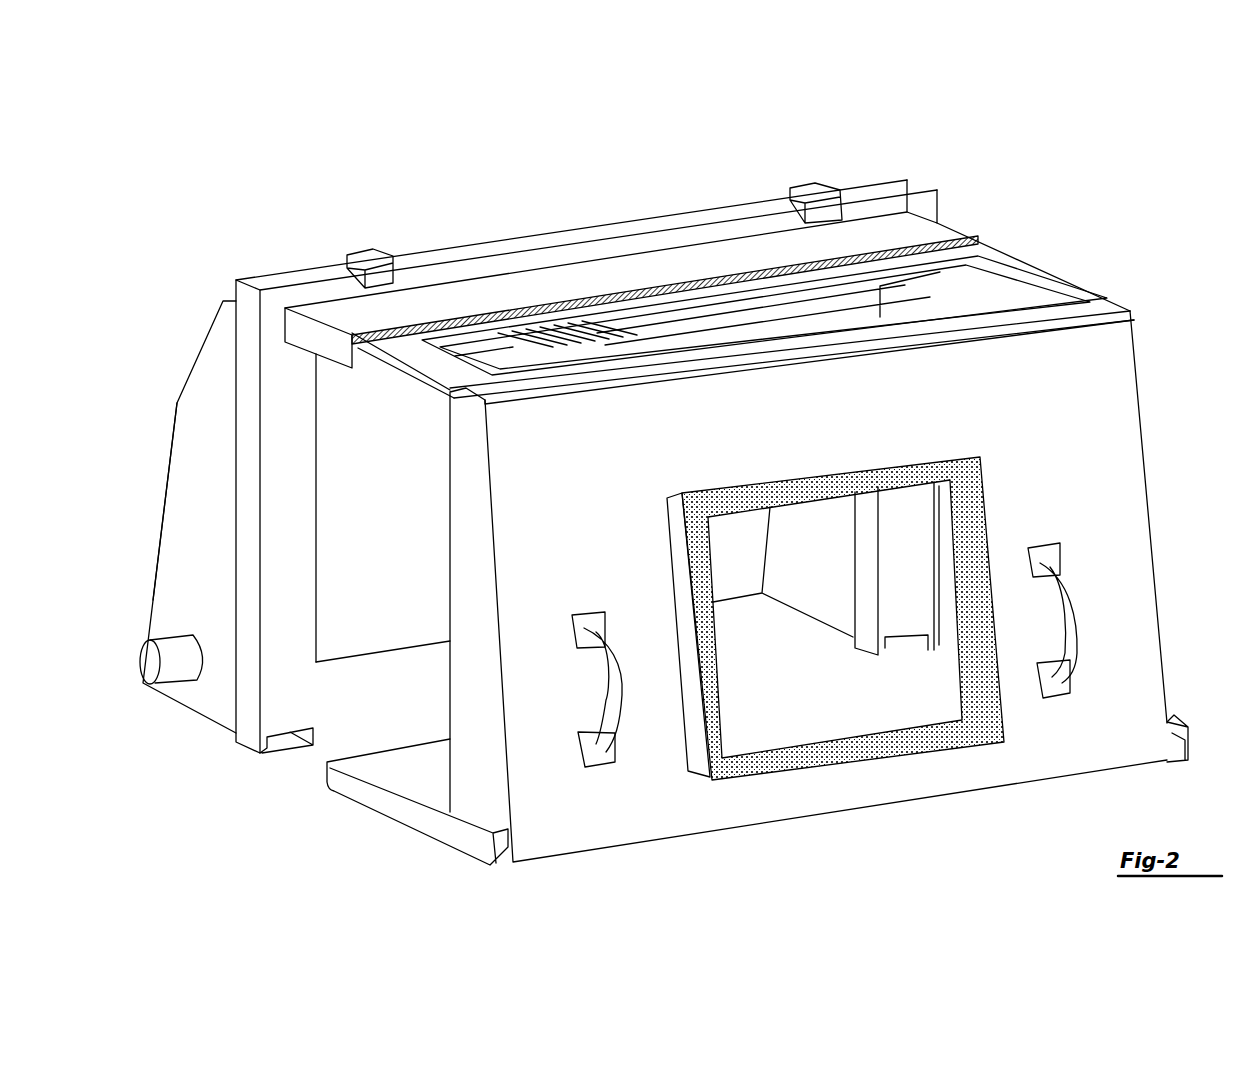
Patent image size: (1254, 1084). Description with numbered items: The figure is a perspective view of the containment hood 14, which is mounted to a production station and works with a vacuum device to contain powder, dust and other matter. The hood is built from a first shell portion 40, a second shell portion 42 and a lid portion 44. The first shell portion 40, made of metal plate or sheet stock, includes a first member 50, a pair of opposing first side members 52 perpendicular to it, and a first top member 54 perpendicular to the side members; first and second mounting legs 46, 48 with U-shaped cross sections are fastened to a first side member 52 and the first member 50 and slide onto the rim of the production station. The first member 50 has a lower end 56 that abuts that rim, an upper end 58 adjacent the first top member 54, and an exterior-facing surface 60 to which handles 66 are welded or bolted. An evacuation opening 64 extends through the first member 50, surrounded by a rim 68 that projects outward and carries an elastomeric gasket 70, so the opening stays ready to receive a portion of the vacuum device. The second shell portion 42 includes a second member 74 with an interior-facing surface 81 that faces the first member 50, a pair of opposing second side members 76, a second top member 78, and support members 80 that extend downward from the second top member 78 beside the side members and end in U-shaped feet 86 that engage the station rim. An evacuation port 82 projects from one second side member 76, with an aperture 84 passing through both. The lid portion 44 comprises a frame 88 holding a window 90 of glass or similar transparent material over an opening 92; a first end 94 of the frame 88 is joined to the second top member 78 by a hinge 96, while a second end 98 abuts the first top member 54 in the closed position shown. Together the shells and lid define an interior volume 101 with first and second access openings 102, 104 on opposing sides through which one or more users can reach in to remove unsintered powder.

The containment hood 14 is at (975, 178).
The first shell portion 40 is at (1147, 380).
The second shell portion 42 is at (197, 355).
The lid portion 44 is at (1017, 258).
The first mounting leg 46 is at (397, 757).
The second mounting leg 48 is at (1170, 720).
The first member 50 is at (800, 808).
The first side member 52 is at (453, 617).
The first top member 54 is at (1110, 300).
The lower end 56 is at (1130, 765).
The upper end 58 is at (1140, 312).
The exterior-facing surface 60 is at (1075, 387).
The evacuation opening 64 is at (812, 505).
The handle 66 is at (615, 685).
The rim 68 is at (672, 540).
The elastomeric gasket 70 is at (985, 500).
The second member 74 is at (372, 652).
The second side member 76 is at (190, 524).
The second top member 78 is at (517, 285).
The support member 80 is at (243, 463).
The interior-facing surface 81 is at (359, 492).
The evacuation port 82 is at (177, 638).
The aperture 84 is at (148, 650).
The U-shaped feet 86 is at (262, 753).
The frame 88 is at (1005, 260).
The window 90 is at (985, 270).
The opening 92 is at (1000, 288).
The first end 94 is at (462, 325).
The hinge 96 is at (437, 305).
The second end 98 is at (1065, 300).
The interior volume 101 is at (355, 410).
The first access opening 102 is at (445, 466).
The second access opening 104 is at (935, 612).